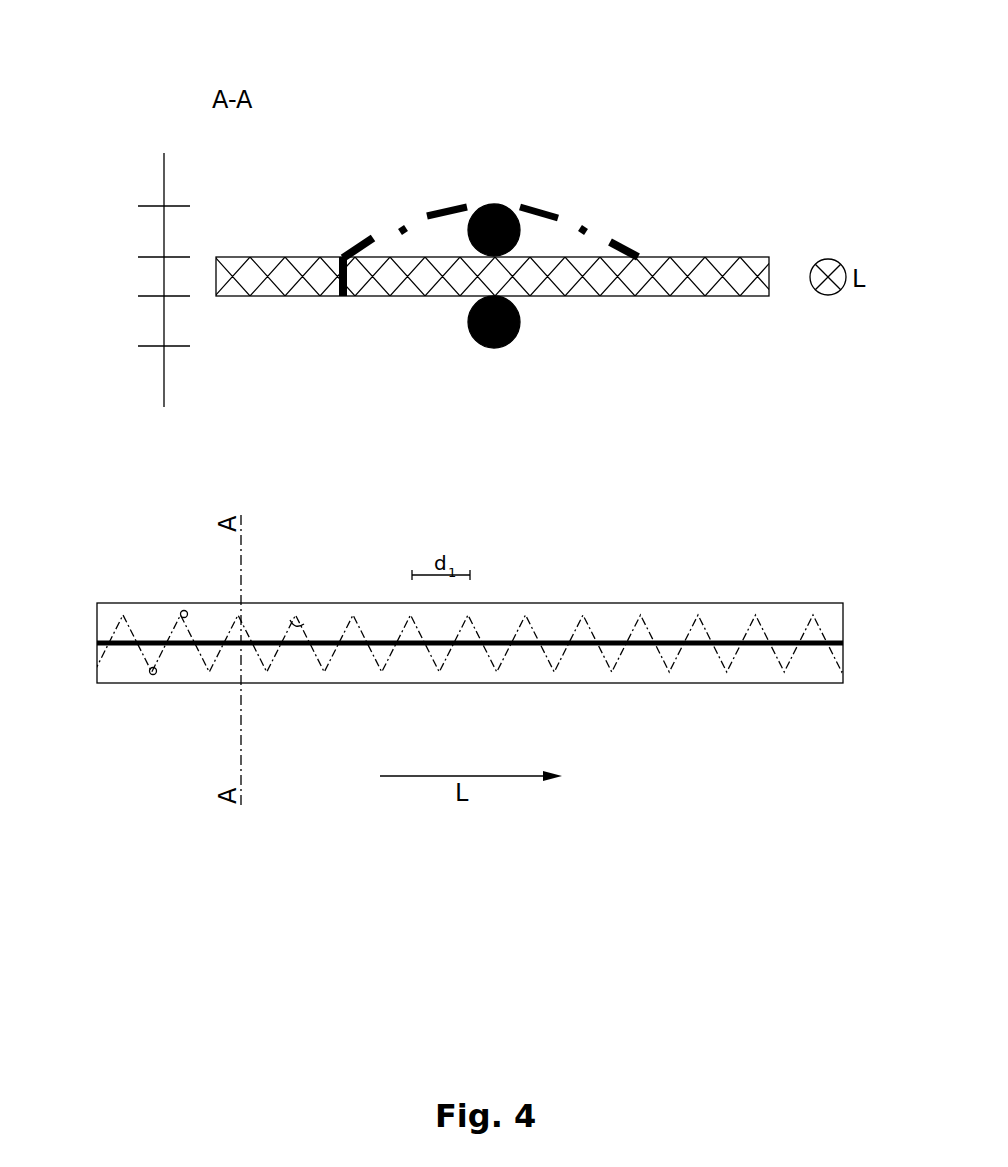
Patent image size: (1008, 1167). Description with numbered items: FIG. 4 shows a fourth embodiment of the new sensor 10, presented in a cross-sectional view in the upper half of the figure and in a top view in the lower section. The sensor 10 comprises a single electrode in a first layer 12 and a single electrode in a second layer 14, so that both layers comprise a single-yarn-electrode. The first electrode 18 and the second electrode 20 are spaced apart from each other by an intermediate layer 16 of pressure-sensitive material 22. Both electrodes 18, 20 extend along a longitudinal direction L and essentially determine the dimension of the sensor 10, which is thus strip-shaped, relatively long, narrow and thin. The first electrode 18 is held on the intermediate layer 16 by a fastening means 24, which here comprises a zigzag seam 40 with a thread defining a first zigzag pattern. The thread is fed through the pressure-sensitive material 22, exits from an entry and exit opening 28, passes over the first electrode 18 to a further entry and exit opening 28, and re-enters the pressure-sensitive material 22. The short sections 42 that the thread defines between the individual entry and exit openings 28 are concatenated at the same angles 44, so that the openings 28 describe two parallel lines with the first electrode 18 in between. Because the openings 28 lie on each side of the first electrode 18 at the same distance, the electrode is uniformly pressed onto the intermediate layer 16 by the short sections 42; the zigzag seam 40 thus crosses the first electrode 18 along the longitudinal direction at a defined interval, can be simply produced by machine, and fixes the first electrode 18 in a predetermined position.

The sensor 10 is at (466, 500).
The first layer 12 is at (130, 245).
The second layer 14 is at (130, 323).
The intermediate layer 16 is at (128, 282).
The first electrode 18 is at (497, 205).
The second electrode 20 is at (512, 337).
The pressure-sensitive material 22 is at (698, 277).
The fastening means 24 is at (426, 194).
The entry and exit opening 28 is at (336, 250).
The zigzag seam 40 is at (371, 236).
The short sections 42 is at (616, 240).
The angles 44 is at (297, 626).